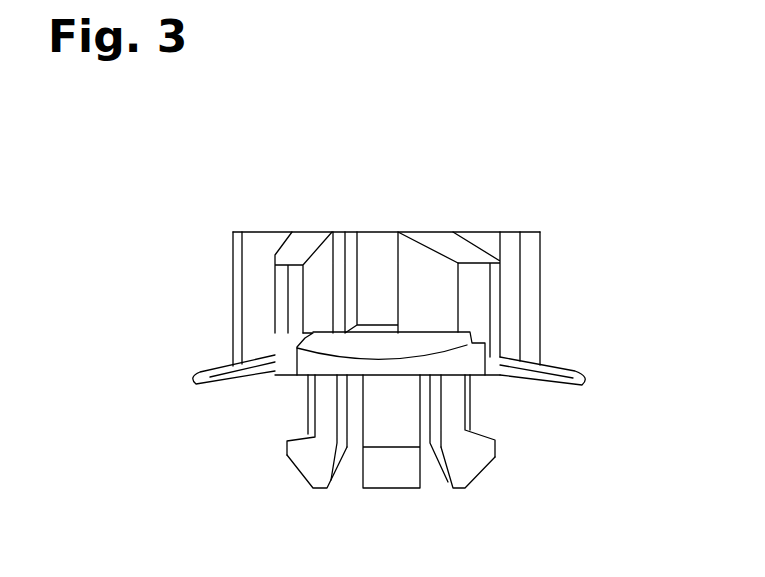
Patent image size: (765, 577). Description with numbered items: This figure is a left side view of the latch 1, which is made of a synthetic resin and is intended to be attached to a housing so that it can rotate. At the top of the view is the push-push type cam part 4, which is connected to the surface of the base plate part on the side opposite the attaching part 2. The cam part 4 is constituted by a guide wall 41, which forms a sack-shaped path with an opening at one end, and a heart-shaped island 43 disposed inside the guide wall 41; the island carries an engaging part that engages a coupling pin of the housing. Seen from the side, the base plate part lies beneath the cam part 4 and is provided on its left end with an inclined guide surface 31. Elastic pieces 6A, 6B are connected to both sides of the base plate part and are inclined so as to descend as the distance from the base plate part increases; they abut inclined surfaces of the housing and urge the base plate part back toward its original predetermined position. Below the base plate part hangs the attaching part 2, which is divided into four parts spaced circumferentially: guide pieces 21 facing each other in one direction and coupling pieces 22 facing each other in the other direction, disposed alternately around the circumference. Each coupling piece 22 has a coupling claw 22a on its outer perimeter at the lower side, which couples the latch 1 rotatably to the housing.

The latch 1 is at (216, 297).
The attaching part 2 is at (349, 483).
The cam part 4 is at (231, 250).
The elastic piece 6A is at (204, 384).
The elastic piece 6B is at (570, 386).
The guide piece 21 is at (400, 438).
The coupling piece 22 is at (327, 402).
The coupling claw 22a is at (303, 458).
The guide surface 31 is at (427, 345).
The guide wall 41 is at (498, 243).
The heart-shaped island 43 is at (377, 257).